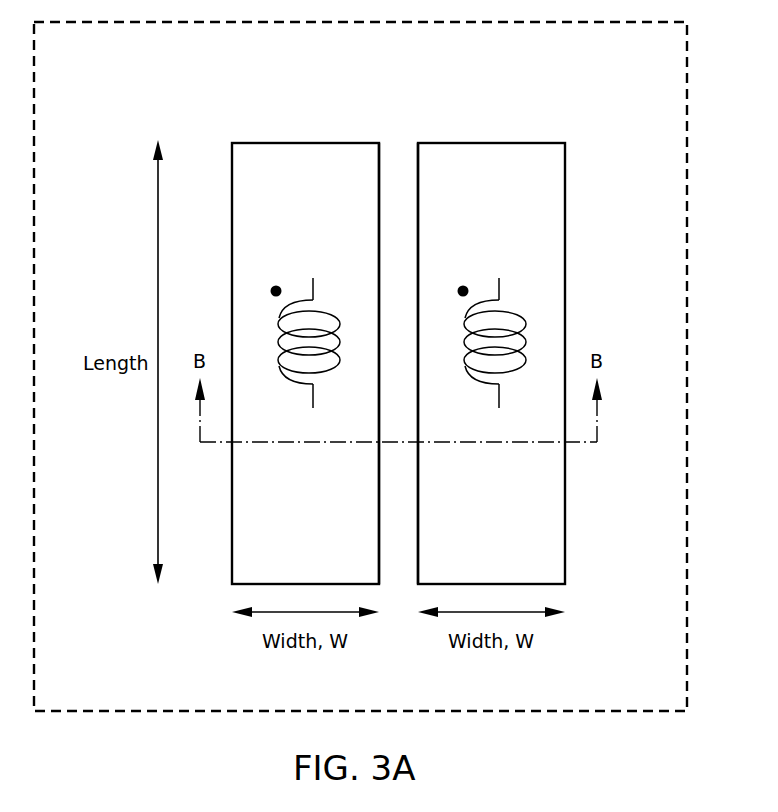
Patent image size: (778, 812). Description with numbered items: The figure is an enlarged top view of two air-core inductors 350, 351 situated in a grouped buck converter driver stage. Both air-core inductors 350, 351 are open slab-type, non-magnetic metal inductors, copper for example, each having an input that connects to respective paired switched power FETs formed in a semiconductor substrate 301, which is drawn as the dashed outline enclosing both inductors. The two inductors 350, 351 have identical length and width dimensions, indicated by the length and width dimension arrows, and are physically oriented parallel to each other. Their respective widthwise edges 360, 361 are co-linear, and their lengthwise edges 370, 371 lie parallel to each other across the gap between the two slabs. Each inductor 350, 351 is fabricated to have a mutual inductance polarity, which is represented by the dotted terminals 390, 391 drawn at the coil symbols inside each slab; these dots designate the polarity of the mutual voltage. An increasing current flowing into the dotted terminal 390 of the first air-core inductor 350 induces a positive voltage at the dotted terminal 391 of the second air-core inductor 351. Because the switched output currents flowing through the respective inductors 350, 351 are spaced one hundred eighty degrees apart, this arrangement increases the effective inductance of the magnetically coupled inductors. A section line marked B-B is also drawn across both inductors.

The semiconductor substrate 301 is at (690, 52).
The air-core inductor 350 is at (327, 557).
The air-core inductor 351 is at (515, 557).
The widthwise edge 360 is at (272, 339).
The widthwise edge 361 is at (524, 339).
The lengthwise edge 370 is at (380, 156).
The lengthwise edge 371 is at (418, 156).
The dotted terminal 390 is at (277, 286).
The dotted terminal 391 is at (464, 286).